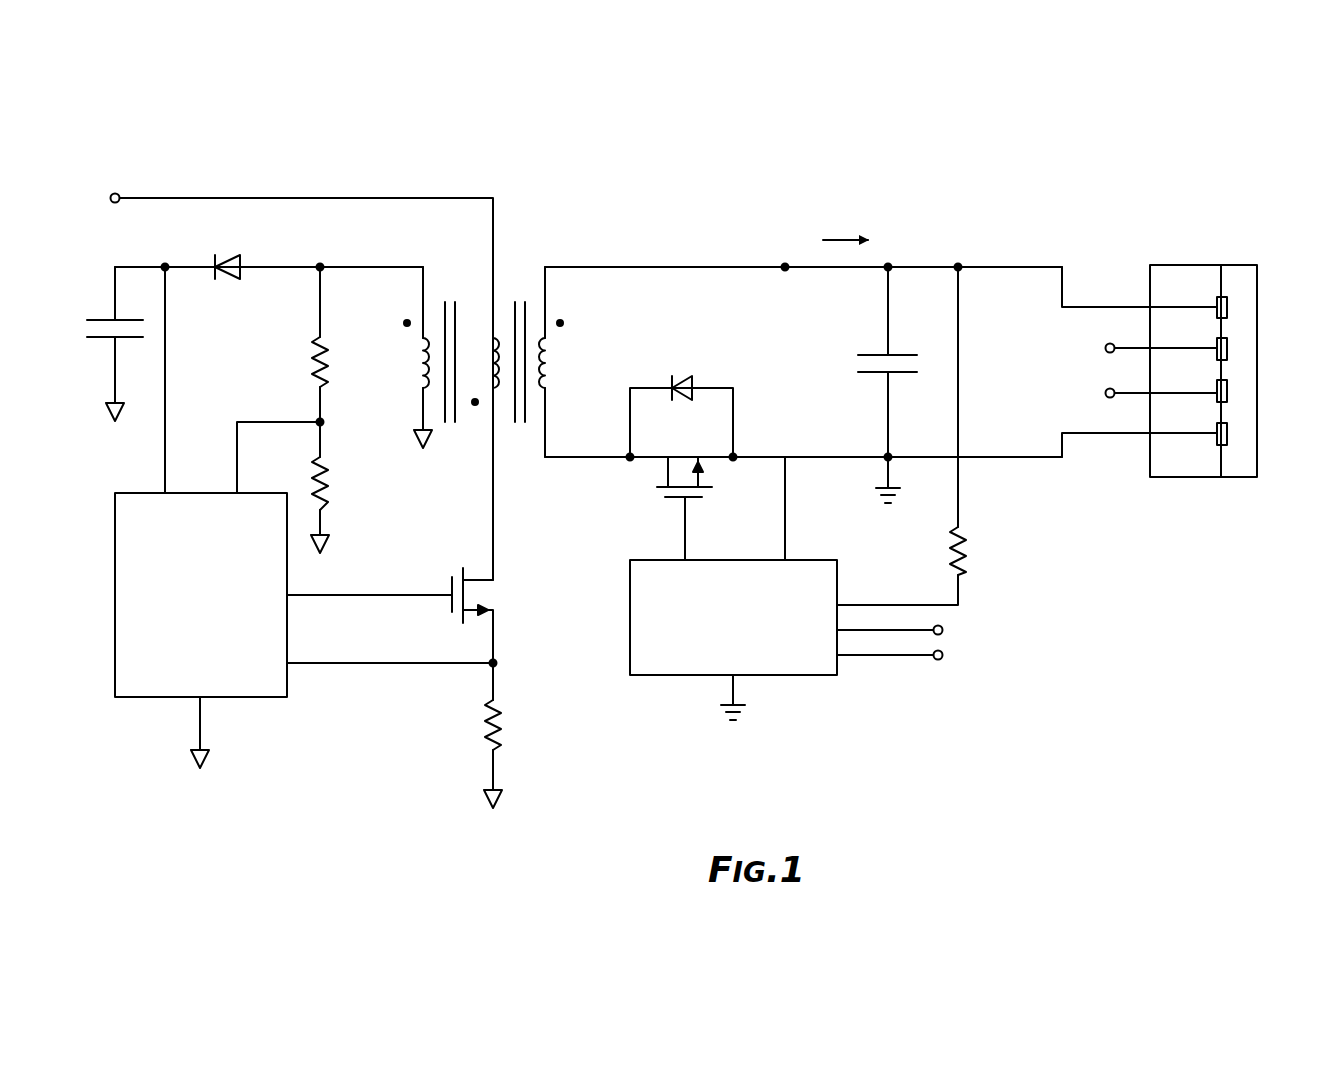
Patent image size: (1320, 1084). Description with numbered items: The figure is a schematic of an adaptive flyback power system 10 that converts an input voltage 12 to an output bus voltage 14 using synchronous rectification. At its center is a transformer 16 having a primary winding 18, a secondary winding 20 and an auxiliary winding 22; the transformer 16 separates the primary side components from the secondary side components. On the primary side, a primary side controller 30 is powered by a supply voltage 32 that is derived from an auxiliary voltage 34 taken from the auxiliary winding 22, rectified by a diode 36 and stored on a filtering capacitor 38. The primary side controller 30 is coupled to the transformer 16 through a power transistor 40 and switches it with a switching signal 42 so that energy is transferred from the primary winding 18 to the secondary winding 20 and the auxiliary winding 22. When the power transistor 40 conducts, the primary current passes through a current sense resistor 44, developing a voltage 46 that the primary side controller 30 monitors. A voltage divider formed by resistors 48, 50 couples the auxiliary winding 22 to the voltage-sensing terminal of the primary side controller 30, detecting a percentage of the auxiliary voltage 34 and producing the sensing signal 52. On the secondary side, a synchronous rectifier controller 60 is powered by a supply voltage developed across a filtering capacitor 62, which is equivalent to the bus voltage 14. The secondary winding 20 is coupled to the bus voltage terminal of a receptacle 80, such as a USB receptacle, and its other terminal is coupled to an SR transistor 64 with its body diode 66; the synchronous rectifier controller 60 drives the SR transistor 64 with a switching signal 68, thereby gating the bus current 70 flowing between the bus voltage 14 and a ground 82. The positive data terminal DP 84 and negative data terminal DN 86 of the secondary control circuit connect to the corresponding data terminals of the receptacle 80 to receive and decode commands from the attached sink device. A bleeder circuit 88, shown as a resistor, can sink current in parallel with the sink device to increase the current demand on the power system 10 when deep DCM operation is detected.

The adaptive flyback power system 10 is at (1003, 195).
The input voltage 12 is at (150, 198).
The output bus voltage 14 is at (1065, 285).
The transformer 16 is at (560, 256).
The primary winding 18 is at (497, 395).
The secondary winding 20 is at (578, 352).
The auxiliary winding 22 is at (425, 385).
The primary side controller 30 is at (201, 630).
The supply voltage 32 is at (170, 390).
The auxiliary voltage 34 is at (342, 250).
The diode 36 is at (228, 282).
The filtering capacitor 38 is at (100, 318).
The power transistor 40 is at (490, 580).
The switching signal 42 is at (408, 590).
The current sense resistor 44 is at (500, 703).
The current sense voltage 46 is at (408, 667).
The voltage divider resistor 48 is at (315, 345).
The voltage divider resistor 50 is at (315, 463).
The sensing signal 52 is at (278, 420).
The synchronous rectifier controller 60 is at (733, 588).
The filtering capacitor 62 is at (872, 352).
The SR transistor 64 is at (648, 478).
The body diode 66 is at (695, 385).
The SR switching signal 68 is at (688, 517).
The bus current 70 is at (880, 230).
The receptacle 80 is at (1243, 478).
The ground 82 is at (1133, 437).
The positive data terminal DP 84 is at (990, 633).
The negative data terminal DN 86 is at (990, 658).
The bleeder circuit 88 is at (963, 545).